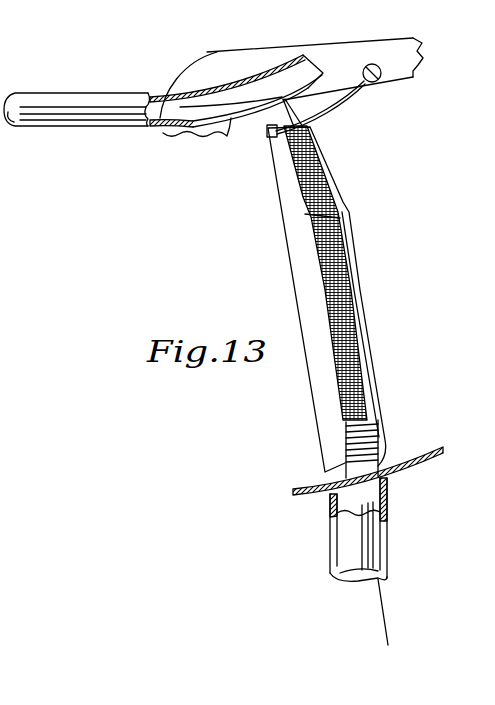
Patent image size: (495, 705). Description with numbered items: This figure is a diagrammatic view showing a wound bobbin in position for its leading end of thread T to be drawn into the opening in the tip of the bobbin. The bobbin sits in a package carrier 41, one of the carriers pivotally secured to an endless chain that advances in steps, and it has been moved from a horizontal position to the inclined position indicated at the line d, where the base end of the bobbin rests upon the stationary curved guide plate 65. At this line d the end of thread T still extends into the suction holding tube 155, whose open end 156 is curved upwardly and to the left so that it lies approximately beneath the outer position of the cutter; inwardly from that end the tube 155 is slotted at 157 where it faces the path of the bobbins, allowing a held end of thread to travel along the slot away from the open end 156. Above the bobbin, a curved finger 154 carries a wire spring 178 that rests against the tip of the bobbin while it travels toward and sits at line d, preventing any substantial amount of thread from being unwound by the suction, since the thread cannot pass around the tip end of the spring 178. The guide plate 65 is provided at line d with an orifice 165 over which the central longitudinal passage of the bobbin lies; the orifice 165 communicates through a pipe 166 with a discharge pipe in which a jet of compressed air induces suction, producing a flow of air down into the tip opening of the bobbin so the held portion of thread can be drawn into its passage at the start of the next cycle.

The suction holding tube 155 is at (107, 105).
The open end 156 is at (292, 39).
The slot 157 is at (248, 113).
The yarn or thread T is at (324, 72).
The curved finger 154 is at (408, 68).
The wire spring 178 is at (323, 121).
The package carrier 41 is at (290, 236).
The orifice 165 is at (385, 466).
The curved guide plate 65 is at (436, 462).
The pipe 166 is at (371, 532).
The line d is at (389, 627).